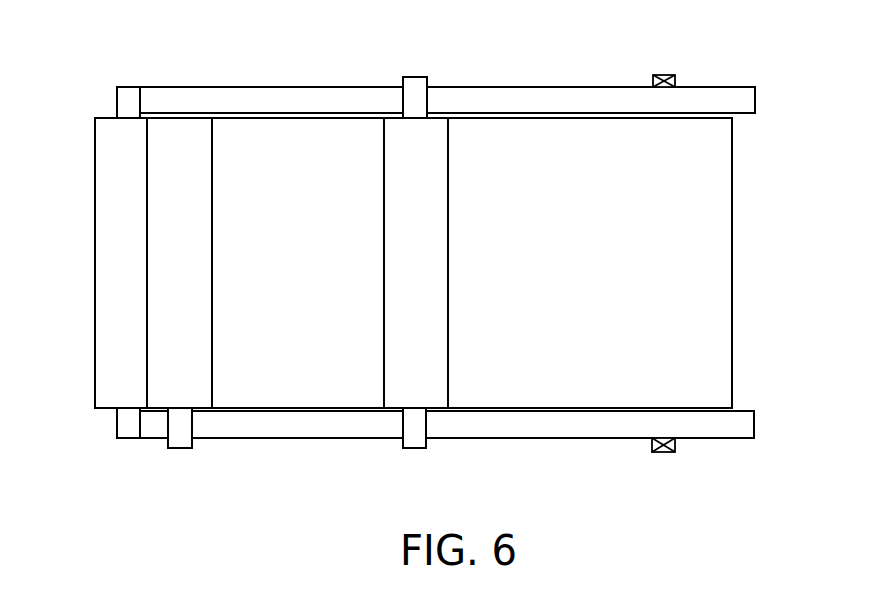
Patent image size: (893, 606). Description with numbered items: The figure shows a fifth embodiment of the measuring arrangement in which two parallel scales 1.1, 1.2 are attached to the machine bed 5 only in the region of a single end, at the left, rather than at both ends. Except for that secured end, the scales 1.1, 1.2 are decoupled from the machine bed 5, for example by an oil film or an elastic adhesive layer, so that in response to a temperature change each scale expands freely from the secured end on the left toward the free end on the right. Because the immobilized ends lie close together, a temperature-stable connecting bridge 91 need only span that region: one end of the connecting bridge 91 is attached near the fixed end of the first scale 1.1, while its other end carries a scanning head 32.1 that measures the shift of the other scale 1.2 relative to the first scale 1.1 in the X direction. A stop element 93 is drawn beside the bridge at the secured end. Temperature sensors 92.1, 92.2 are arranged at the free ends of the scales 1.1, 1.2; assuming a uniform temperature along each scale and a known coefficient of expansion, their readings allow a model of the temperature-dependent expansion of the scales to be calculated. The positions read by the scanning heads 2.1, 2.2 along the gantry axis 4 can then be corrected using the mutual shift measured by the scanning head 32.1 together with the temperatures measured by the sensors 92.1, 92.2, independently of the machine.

The first scale 1.1 is at (257, 93).
The second scale 1.2 is at (278, 430).
The scanning head 2.1 is at (418, 90).
The scanning head 2.2 is at (417, 441).
The gantry axis 4 is at (427, 272).
The machine bed 5 is at (718, 248).
The connecting bridge 91 is at (161, 258).
The temperature sensor 92.1 is at (666, 75).
The temperature sensor 92.2 is at (665, 453).
The stop block 93 is at (148, 432).
The scanning head 32.1 is at (180, 441).